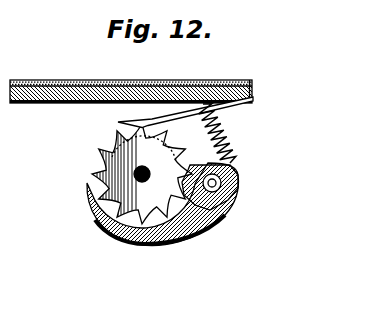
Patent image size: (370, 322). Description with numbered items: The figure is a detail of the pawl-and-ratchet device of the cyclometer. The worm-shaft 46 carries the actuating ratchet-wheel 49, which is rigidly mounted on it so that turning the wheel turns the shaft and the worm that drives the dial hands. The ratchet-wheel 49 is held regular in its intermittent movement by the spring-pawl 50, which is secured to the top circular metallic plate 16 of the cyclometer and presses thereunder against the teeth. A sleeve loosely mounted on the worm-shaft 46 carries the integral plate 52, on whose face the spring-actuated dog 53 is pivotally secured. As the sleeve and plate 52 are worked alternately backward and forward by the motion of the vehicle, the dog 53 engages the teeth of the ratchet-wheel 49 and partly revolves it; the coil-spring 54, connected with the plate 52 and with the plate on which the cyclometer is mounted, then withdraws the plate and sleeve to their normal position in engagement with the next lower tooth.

The top circular metallic plate 16 is at (43, 95).
The worm-shaft 46 is at (142, 186).
The actuating ratchet-wheel 49 is at (112, 157).
The spring-pawl 50 is at (165, 115).
The plate 52 is at (97, 218).
The spring-actuated dog 53 is at (215, 199).
The coil-spring 54 is at (229, 140).